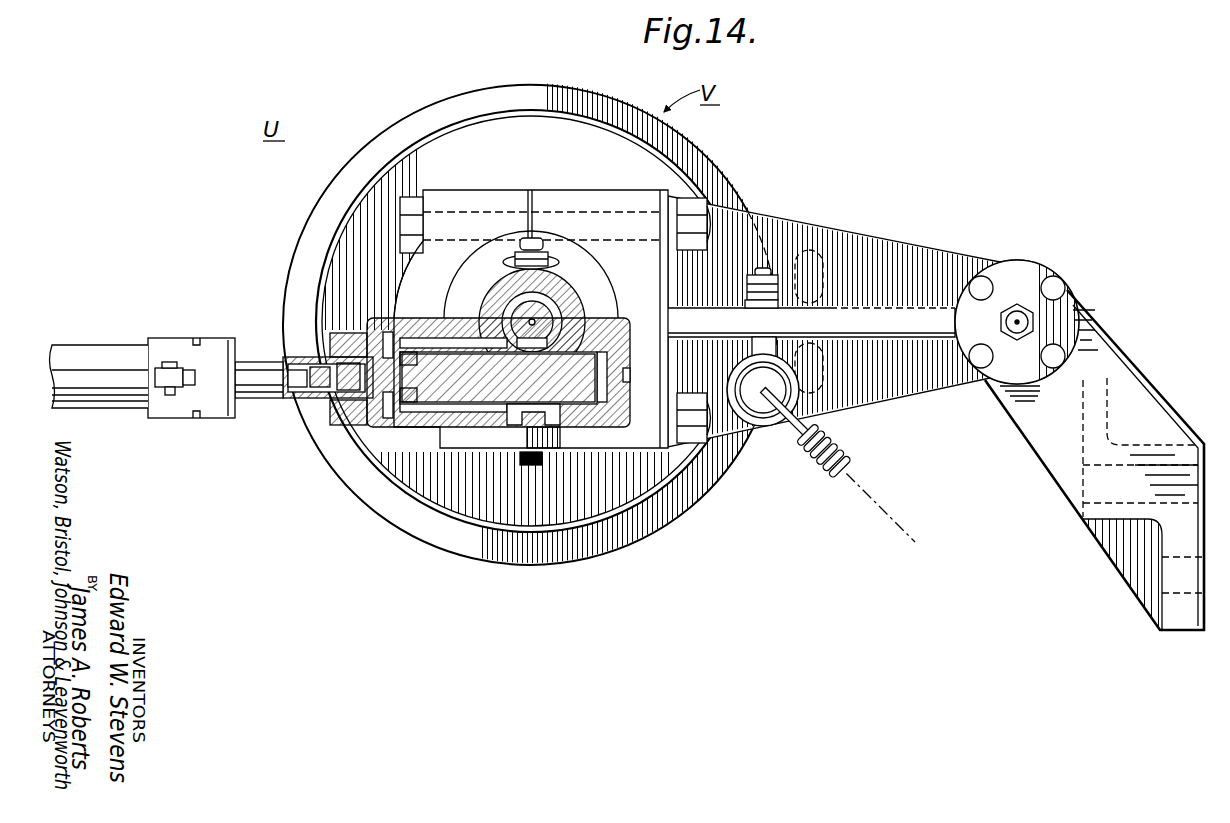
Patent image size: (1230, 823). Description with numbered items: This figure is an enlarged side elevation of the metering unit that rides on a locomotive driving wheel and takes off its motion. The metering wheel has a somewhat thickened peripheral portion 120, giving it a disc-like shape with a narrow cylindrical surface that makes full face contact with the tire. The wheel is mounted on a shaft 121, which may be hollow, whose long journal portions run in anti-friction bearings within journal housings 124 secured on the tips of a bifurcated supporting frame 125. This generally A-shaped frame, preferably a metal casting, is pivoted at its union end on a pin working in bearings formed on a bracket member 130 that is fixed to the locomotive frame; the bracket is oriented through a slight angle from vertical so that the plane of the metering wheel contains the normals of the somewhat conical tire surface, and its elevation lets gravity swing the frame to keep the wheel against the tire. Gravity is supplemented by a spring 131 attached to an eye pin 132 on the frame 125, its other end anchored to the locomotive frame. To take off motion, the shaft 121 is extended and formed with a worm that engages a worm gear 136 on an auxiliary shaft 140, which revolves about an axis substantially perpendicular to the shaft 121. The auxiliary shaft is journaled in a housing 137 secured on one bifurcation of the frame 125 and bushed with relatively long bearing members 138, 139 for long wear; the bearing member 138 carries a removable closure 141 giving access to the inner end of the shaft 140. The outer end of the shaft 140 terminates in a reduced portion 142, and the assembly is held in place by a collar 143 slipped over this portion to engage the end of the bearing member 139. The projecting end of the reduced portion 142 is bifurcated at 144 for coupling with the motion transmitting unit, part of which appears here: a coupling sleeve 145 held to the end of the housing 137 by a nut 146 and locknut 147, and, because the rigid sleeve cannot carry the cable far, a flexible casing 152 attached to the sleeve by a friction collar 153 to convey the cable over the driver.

The thickened peripheral portion 120 is at (693, 158).
The shaft 121 is at (536, 318).
The journal housings 124 is at (398, 298).
The bifurcated supporting frame 125 is at (838, 224).
The bracket member 130 is at (1143, 374).
The spring 131 is at (880, 468).
The eye pin 132 is at (777, 433).
The worm gear 136 is at (533, 412).
The housing 137 is at (372, 440).
The bearing member 138 is at (585, 402).
The bearing member 139 is at (455, 388).
The auxiliary shaft 140 is at (462, 410).
The closure 141 is at (640, 383).
The reduced portion 142 is at (300, 395).
The collar 143 is at (370, 403).
The bifurcation 144 is at (330, 347).
The coupling sleeve 145 is at (267, 350).
The nut 146 is at (383, 423).
The locknut 147 is at (327, 398).
The flexible casing 152 is at (84, 347).
The friction collar 153 is at (178, 412).